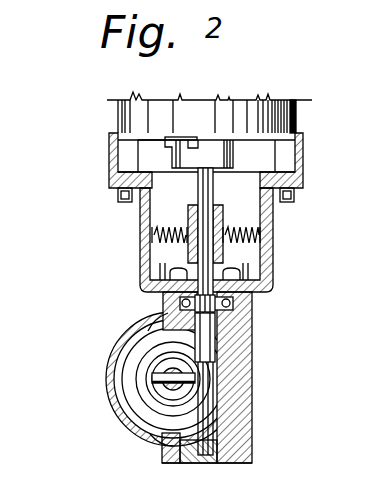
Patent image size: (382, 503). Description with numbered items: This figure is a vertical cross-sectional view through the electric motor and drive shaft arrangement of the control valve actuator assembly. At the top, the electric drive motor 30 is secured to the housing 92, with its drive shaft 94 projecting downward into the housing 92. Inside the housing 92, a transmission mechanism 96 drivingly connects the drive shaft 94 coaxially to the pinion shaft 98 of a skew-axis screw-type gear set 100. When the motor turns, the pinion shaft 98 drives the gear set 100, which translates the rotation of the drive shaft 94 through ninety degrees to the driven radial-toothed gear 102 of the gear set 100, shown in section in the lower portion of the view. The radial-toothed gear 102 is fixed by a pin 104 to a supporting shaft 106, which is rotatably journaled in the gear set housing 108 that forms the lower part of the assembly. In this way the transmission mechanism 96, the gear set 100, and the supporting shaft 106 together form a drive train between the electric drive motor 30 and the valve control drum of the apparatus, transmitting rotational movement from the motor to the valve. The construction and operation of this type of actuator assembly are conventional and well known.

The electric drive motor 30 is at (245, 100).
The housing 92 is at (262, 233).
The drive shaft 94 is at (210, 187).
The transmission mechanism 96 is at (224, 257).
The pinion shaft 98 is at (208, 374).
The skew-axis screw-type gear set 100 is at (122, 388).
The radial-toothed gear 102 is at (135, 367).
The pin 104 is at (160, 381).
The supporting shaft 106 is at (148, 331).
The gear set housing 108 is at (252, 412).